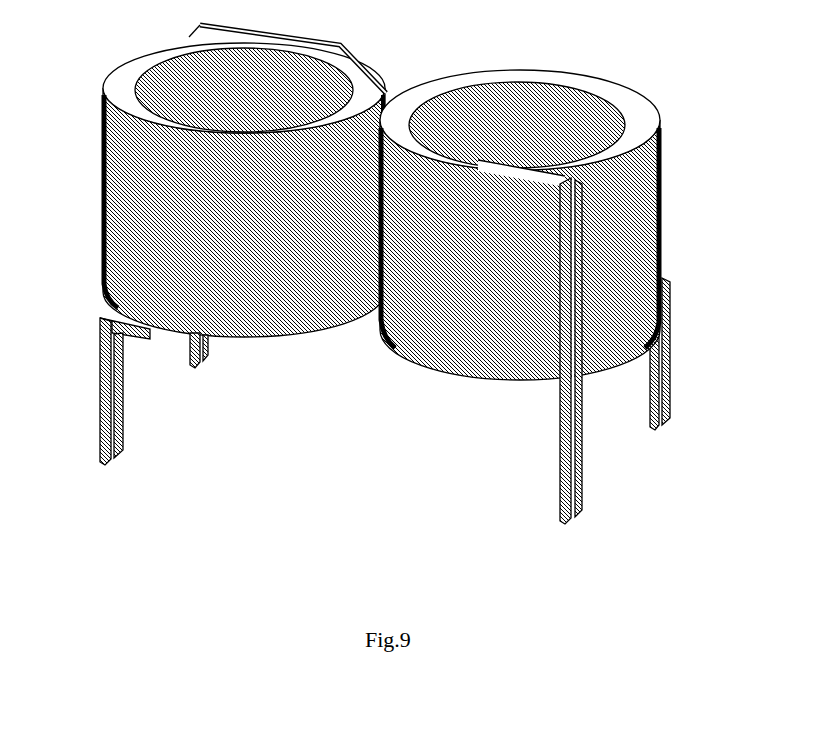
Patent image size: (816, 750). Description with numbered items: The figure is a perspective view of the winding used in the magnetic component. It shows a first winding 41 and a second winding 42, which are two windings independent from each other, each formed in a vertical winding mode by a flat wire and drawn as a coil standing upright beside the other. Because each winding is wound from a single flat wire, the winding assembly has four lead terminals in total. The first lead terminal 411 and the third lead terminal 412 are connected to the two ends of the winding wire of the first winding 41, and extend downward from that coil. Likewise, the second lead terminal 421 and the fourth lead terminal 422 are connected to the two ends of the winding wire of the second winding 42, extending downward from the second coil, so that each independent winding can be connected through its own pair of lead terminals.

The first winding 41 is at (150, 176).
The second winding 42 is at (660, 205).
The first lead terminal 411 is at (112, 400).
The third lead terminal 412 is at (201, 347).
The second lead terminal 421 is at (660, 390).
The fourth lead terminal 422 is at (572, 476).